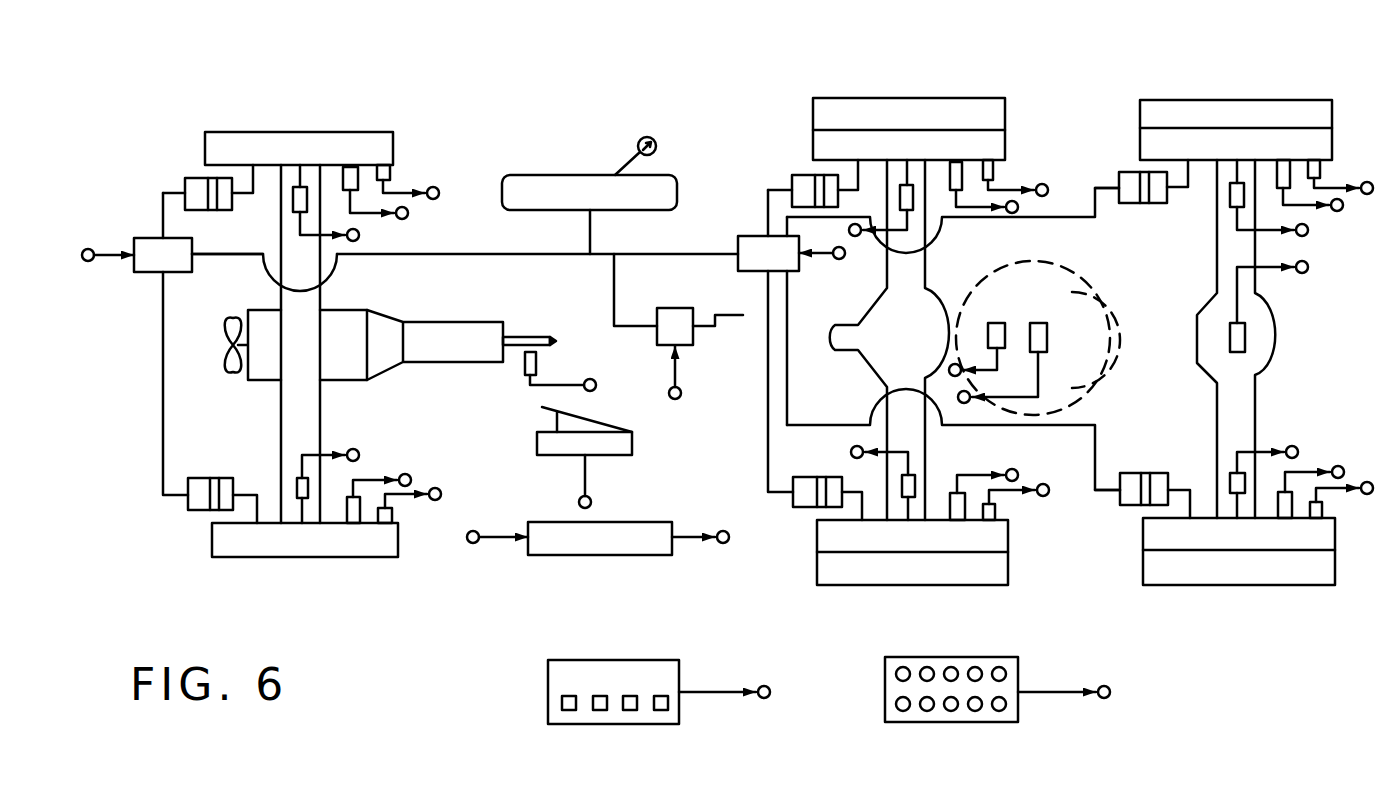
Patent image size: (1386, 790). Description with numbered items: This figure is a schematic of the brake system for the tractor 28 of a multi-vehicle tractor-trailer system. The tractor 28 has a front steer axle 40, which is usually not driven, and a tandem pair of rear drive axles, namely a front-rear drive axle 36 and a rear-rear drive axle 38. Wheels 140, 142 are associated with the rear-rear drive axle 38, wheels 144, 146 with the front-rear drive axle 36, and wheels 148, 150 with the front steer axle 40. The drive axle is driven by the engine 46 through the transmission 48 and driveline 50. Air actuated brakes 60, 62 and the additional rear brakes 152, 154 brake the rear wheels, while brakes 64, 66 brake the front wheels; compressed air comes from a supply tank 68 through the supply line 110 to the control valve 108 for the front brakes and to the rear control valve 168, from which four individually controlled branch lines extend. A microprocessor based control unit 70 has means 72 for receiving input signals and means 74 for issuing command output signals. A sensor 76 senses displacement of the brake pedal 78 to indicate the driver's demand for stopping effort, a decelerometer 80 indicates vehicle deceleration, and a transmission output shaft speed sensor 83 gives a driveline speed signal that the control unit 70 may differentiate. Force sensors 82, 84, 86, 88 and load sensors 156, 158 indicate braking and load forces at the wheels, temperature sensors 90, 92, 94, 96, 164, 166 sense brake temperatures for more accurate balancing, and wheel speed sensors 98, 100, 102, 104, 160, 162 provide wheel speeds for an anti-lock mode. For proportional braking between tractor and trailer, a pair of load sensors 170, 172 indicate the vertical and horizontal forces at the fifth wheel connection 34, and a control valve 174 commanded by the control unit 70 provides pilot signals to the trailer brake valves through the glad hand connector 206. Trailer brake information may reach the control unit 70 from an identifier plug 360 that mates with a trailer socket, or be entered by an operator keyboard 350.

The tractor 28 is at (661, 80).
The fifth wheel connection 34 is at (1086, 395).
The front-rear drive axle 36 is at (883, 86).
The rear-rear drive axle 38 is at (1184, 88).
The front steer axle 40 is at (335, 98).
The engine 46 is at (331, 366).
The transmission 48 is at (441, 346).
The driveline 50 is at (535, 337).
The air actuated brake 60 is at (802, 176).
The air actuated brake 62 is at (812, 477).
The air actuated brake 64 is at (228, 211).
The air actuated brake 66 is at (201, 478).
The supply tank 68 is at (583, 190).
The control unit 70 is at (640, 546).
The means for receiving input signals 72 is at (500, 540).
The means for issuing command output signals 74 is at (700, 516).
The sensor 76 is at (620, 444).
The brake pedal 78 is at (573, 413).
The decelerometer 80 is at (1246, 338).
The force sensor 82 is at (907, 184).
The transmission output shaft speed sensor 83 is at (540, 366).
The force sensor 84 is at (908, 500).
The force sensor 86 is at (301, 183).
The force sensor 88 is at (303, 500).
The temperature sensor 90 is at (994, 170).
The temperature sensor 92 is at (997, 509).
The temperature sensor 94 is at (391, 174).
The temperature sensor 96 is at (396, 515).
The wheel speed sensor 98 is at (957, 165).
The wheel speed sensor 100 is at (960, 521).
The wheel speed sensor 102 is at (348, 166).
The wheel speed sensor 104 is at (353, 520).
The control valve 108 is at (150, 266).
The supply line 110 is at (518, 254).
The wheel 140 is at (1285, 117).
The wheel 142 is at (1196, 566).
The wheel 144 is at (946, 116).
The wheel 146 is at (870, 566).
The wheel 148 is at (233, 150).
The wheel 150 is at (250, 545).
The rear brake 152 is at (1128, 204).
The rear brake 154 is at (1130, 473).
The load sensor 156 is at (1237, 183).
The load sensor 158 is at (1237, 497).
The wheel speed sensor 160 is at (1284, 172).
The wheel speed sensor 162 is at (1285, 512).
The temperature sensor 164 is at (1321, 170).
The temperature sensor 166 is at (1322, 509).
The rear control valve 168 is at (745, 236).
The load sensor 170 is at (1038, 323).
The load sensor 172 is at (997, 323).
The control valve 174 is at (671, 315).
The connector 206 is at (725, 320).
The operator keyboard 350 is at (540, 690).
The identifier plug 360 is at (882, 690).